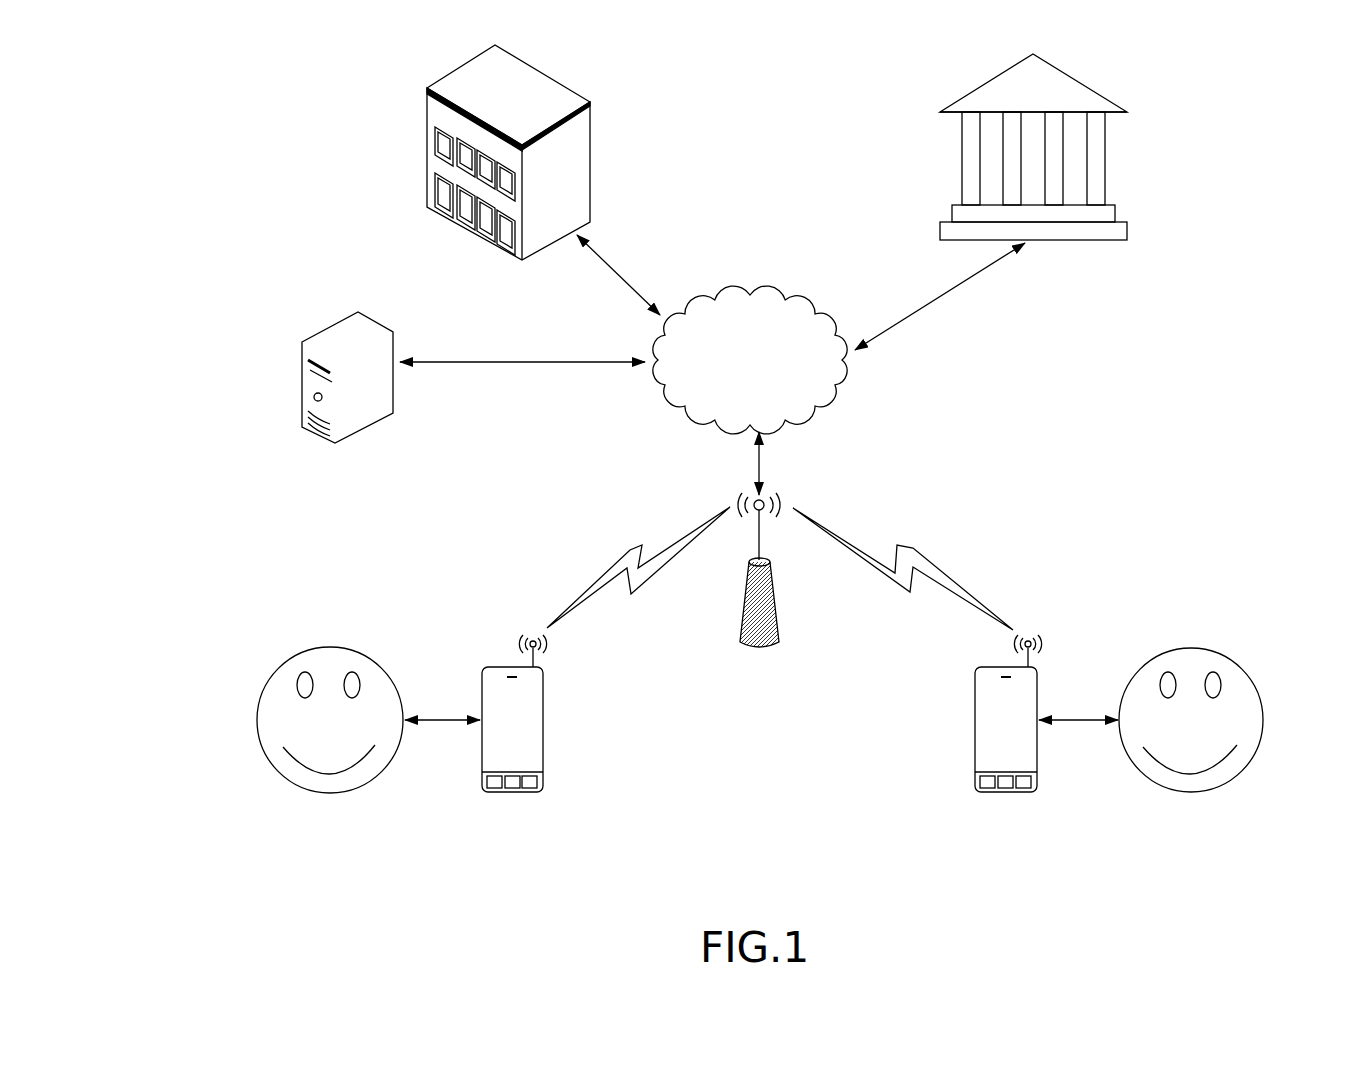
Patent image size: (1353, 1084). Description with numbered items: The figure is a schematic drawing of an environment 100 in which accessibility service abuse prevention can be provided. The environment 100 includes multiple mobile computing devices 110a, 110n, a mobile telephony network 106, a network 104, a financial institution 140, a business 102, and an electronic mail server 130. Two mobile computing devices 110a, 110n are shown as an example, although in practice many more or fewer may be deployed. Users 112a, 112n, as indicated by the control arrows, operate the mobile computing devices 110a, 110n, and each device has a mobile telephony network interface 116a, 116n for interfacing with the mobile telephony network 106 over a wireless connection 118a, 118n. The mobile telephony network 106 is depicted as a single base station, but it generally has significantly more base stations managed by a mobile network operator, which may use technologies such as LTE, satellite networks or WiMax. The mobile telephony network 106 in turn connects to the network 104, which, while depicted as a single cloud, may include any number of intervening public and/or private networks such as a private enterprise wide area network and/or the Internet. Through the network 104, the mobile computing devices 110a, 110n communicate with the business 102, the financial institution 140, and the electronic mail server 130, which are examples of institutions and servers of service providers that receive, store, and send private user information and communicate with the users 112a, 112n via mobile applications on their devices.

The environment 100 is at (197, 118).
The business 102 is at (430, 88).
The network 104 is at (734, 387).
The mobile telephony network 106 is at (753, 652).
The mobile computing device 110a is at (497, 792).
The mobile computing device 110n is at (1003, 792).
The user 112a is at (293, 787).
The user 112n is at (1197, 794).
The mobile telephony network interface 116a is at (528, 610).
The mobile telephony network interface 116n is at (1022, 610).
The wireless connection 118a is at (632, 550).
The wireless connection 118n is at (902, 548).
The electronic mail server 130 is at (358, 312).
The financial institution 140 is at (983, 84).